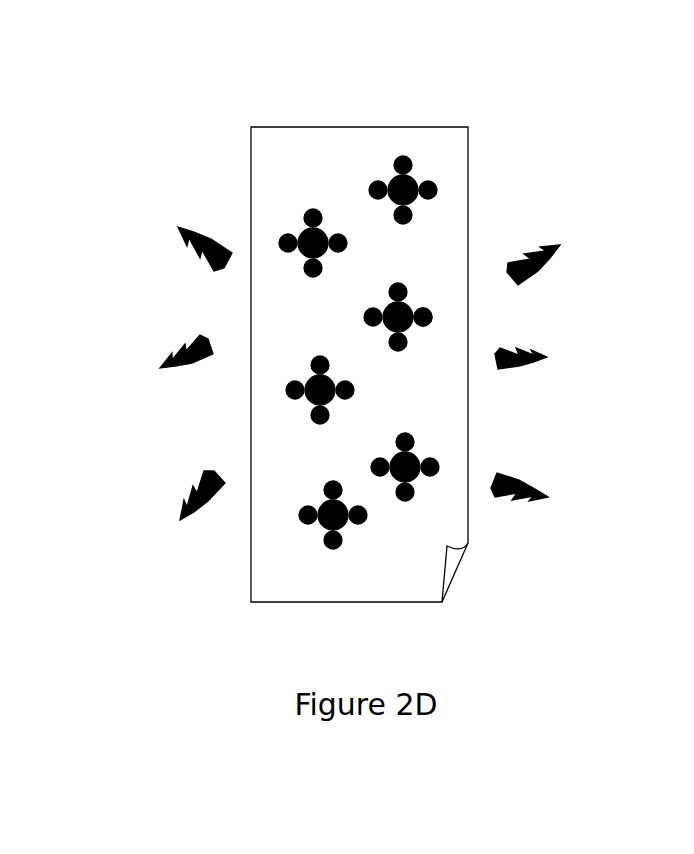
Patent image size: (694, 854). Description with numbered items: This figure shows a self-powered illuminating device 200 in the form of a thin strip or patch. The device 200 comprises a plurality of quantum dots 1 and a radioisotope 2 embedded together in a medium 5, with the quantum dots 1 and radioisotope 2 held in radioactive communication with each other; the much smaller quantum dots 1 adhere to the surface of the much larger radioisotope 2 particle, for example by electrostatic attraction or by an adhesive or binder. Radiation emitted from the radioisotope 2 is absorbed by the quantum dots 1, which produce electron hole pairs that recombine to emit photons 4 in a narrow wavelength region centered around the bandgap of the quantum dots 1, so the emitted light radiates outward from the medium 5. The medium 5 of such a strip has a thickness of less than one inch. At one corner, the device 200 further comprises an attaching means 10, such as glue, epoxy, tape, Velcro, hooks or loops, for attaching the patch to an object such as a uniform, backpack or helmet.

The illuminating device 200 is at (382, 330).
The quantum dots 1 is at (437, 183).
The radioisotope 2 is at (430, 317).
The photons 4 is at (180, 389).
The medium 5 is at (276, 560).
The attaching means 10 is at (462, 572).